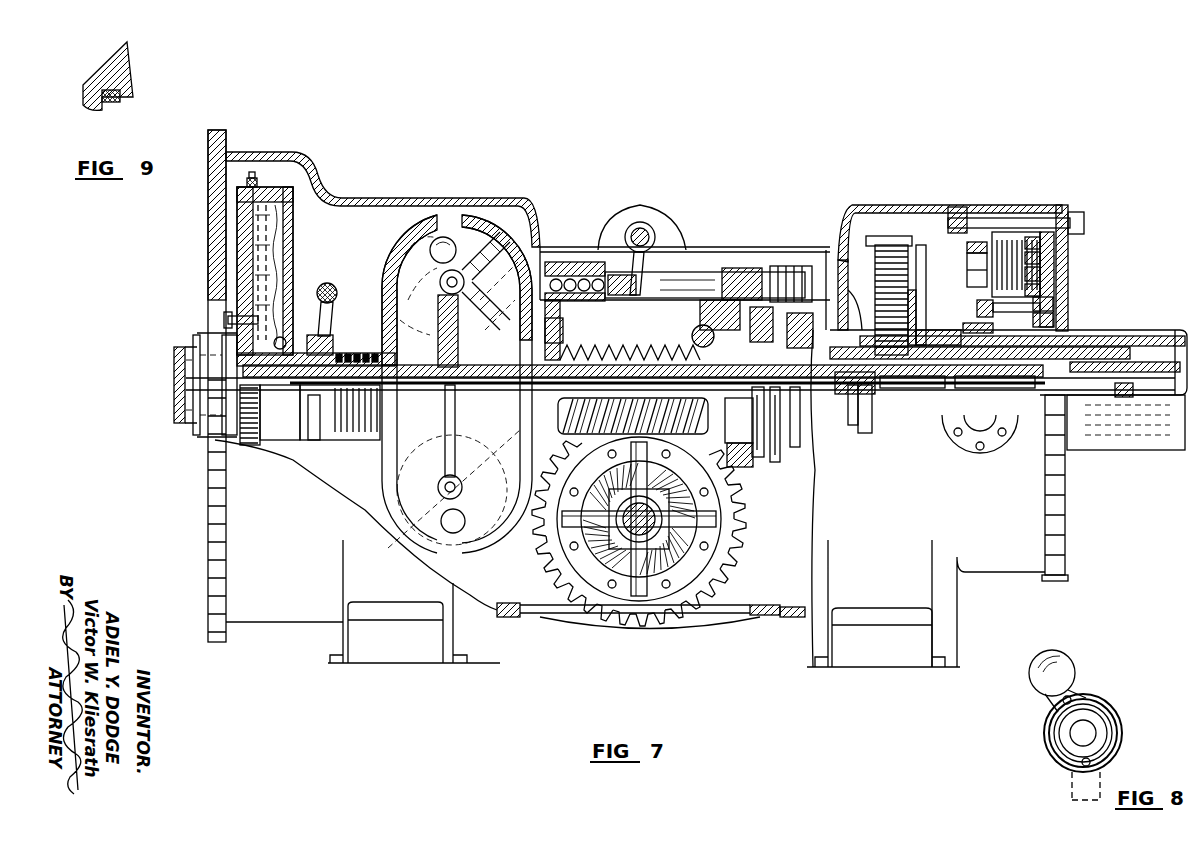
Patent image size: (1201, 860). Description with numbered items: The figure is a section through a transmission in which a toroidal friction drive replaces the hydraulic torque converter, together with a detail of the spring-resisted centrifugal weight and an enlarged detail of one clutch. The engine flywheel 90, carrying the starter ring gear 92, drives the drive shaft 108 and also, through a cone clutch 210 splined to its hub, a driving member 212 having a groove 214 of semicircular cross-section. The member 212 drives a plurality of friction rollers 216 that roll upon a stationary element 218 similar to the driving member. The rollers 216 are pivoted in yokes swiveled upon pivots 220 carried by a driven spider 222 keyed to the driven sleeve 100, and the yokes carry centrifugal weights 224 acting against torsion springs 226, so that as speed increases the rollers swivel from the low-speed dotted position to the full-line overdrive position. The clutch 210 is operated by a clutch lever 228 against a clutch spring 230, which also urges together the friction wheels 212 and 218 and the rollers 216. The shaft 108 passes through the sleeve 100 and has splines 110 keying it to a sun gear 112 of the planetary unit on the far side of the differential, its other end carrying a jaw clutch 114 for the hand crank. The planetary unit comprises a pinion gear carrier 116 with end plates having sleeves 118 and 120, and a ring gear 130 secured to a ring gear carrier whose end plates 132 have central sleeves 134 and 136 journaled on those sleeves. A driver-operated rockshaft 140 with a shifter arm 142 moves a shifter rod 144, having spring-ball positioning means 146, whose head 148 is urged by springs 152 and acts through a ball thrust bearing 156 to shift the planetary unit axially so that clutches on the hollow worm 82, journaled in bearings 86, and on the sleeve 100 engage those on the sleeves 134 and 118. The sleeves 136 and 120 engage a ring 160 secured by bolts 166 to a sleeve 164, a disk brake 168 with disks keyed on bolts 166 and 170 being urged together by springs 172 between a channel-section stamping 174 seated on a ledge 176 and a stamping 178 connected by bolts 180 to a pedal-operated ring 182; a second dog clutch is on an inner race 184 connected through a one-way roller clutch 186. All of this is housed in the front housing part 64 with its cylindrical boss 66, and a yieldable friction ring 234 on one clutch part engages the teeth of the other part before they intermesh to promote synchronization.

In FIG. 7, the front part 64 is at (1030, 485).
In FIG. 7, the cylindrical boss 66 is at (1123, 440).
In FIG. 7, the hollow worm 82 is at (638, 345).
In FIG. 7, the roller bearings 86 is at (720, 335).
In FIG. 7, the flywheel 90 is at (240, 247).
In FIG. 7, the starter ring gear 92 is at (254, 178).
In FIG. 7, the sleeve 100 is at (580, 397).
In FIG. 7, the drive shaft 108 is at (638, 397).
In FIG. 7, the splines 110 is at (925, 388).
In FIG. 7, the sun gear 112 is at (872, 395).
In FIG. 7, the jaw clutch 114 is at (1130, 395).
In FIG. 7, the pinion gear carrier 116 is at (921, 300).
In FIG. 7, the sleeve 118 is at (925, 332).
In FIG. 7, the sleeve 120 is at (965, 388).
In FIG. 7, the ring gear 130 is at (890, 245).
In FIG. 7, the end plates 132 is at (868, 238).
In FIG. 7, the sleeve 134 is at (840, 385).
In FIG. 9, the sleeve 134 is at (131, 78).
In FIG. 7, the sleeve 136 is at (963, 326).
In FIG. 7, the rockshaft 140 is at (620, 245).
In FIG. 7, the shifter arm 142 is at (650, 225).
In FIG. 7, the shifter rod 144 is at (735, 268).
In FIG. 7, the spring-ball and notch positioning means 146 is at (578, 272).
In FIG. 7, the head 148 is at (843, 247).
In FIG. 7, the springs 152 is at (845, 394).
In FIG. 7, the ball thrust bearing 156 is at (848, 290).
In FIG. 7, the ring 160 is at (977, 305).
In FIG. 7, the sleeve 164 is at (1140, 345).
In FIG. 7, the bolts 166 is at (1056, 293).
In FIG. 7, the disk brake 168 is at (1056, 278).
In FIG. 7, the bolts 170 is at (1000, 218).
In FIG. 7, the springs 172 is at (1056, 246).
In FIG. 7, the annular channel-section stamping 174 is at (1010, 232).
In FIG. 7, the ledge 176 is at (1047, 232).
In FIG. 7, the stamping 178 is at (1056, 263).
In FIG. 7, the bolts 180 is at (967, 264).
In FIG. 7, the ring 182 is at (975, 242).
In FIG. 7, the inner race 184 is at (1056, 325).
In FIG. 7, the one-way roller clutch 186 is at (1056, 309).
In FIG. 7, the cone clutch 210 is at (278, 258).
In FIG. 7, the driving member 212 is at (410, 245).
In FIG. 7, the groove 214 is at (438, 300).
In FIG. 7, the friction rollers 216 is at (415, 230).
In FIG. 7, the stationary element 218 is at (540, 247).
In FIG. 7, the pivots 220 is at (480, 240).
In FIG. 8, the pivots 220 is at (1086, 735).
In FIG. 7, the driven spider 222 is at (445, 440).
In FIG. 8, the driven spider 222 is at (1075, 790).
In FIG. 7, the centrifugal weights 224 is at (443, 237).
In FIG. 8, the centrifugal weights 224 is at (1062, 672).
In FIG. 7, the torsion springs 226 is at (448, 487).
In FIG. 8, the torsion springs 226 is at (1050, 745).
In FIG. 7, the clutch lever 228 is at (322, 312).
In FIG. 7, the clutch spring 230 is at (368, 397).
In FIG. 9, the yieldable friction ring 234 is at (112, 103).